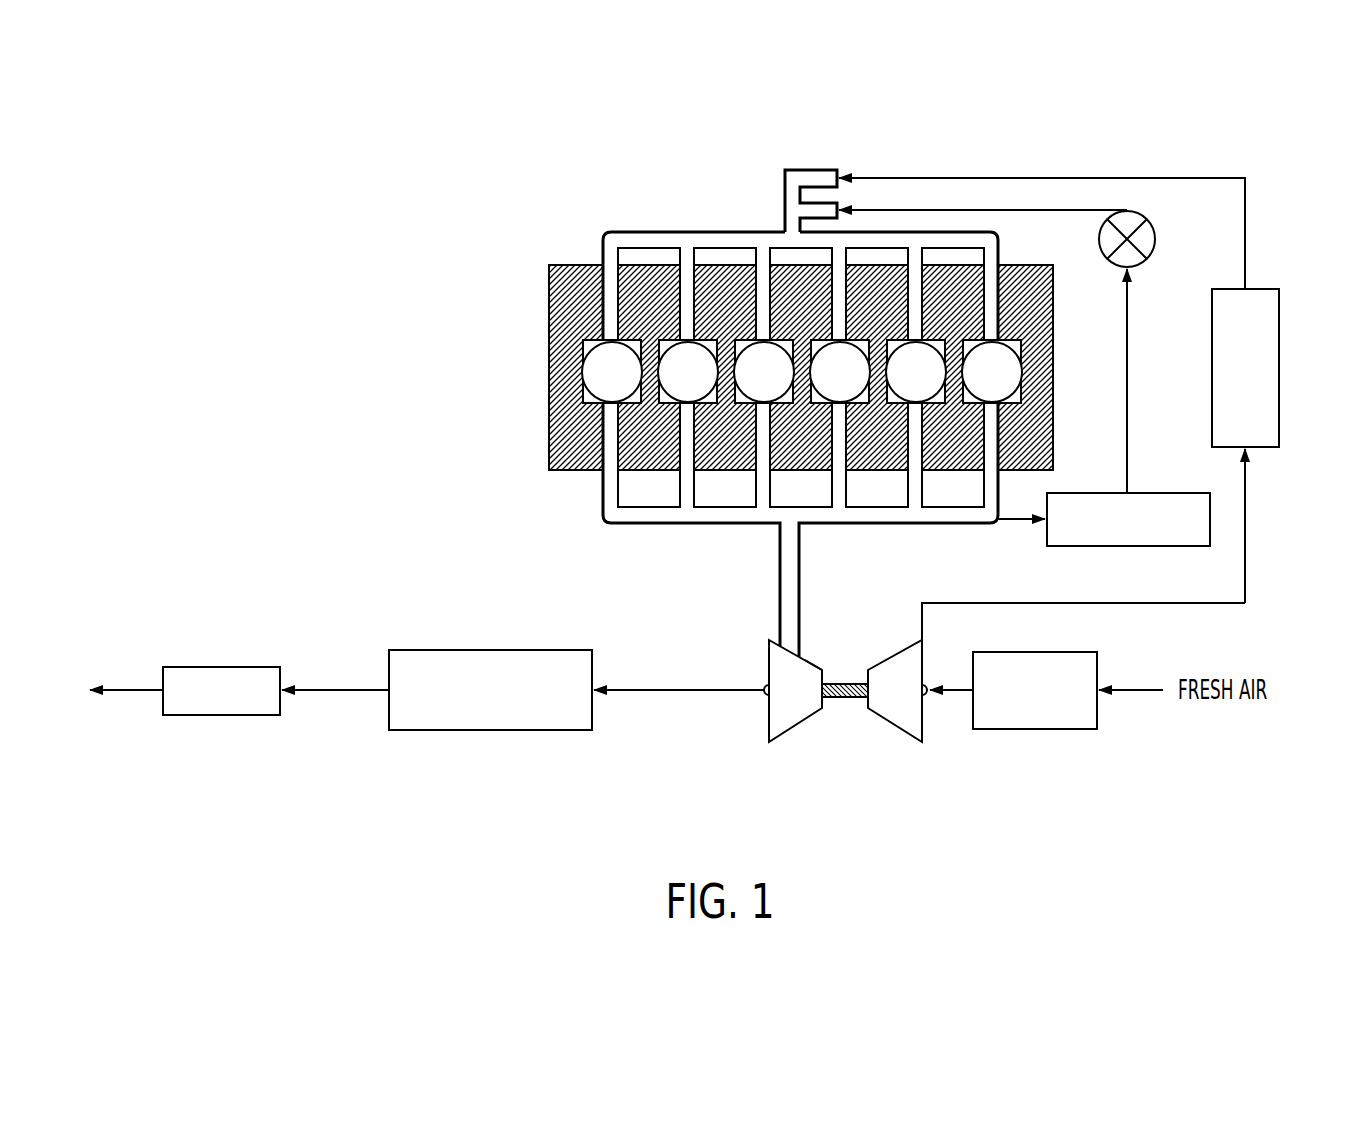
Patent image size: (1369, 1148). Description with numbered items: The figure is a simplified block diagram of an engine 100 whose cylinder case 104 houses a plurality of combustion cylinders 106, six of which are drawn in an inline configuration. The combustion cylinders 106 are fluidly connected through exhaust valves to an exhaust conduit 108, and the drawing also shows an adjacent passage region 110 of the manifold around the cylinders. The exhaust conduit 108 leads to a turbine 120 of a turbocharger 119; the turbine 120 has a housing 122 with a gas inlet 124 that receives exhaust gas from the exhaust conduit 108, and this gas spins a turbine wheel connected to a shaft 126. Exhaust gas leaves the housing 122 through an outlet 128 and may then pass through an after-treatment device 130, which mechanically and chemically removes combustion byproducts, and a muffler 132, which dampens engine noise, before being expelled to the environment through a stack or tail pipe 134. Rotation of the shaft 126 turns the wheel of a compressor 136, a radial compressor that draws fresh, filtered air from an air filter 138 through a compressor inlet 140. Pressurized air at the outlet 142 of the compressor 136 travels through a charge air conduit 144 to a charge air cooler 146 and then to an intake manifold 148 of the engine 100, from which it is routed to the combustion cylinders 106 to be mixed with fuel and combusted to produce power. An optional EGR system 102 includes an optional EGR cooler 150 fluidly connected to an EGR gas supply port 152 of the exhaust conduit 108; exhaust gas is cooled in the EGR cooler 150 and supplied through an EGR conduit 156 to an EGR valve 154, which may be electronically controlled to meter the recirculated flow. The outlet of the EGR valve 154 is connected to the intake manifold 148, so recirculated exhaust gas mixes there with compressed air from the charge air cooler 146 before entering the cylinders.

The engine 100 is at (1188, 152).
The EGR system 102 is at (1217, 588).
The cylinder case 104 is at (556, 283).
The combustion cylinders 106 is at (600, 383).
The exhaust conduit 108 is at (893, 525).
The exhaust passage 110 is at (668, 525).
The turbocharger 119 is at (845, 750).
The turbine 120 is at (799, 733).
The housing 122 is at (822, 668).
The gas inlet 124 is at (786, 648).
The shaft 126 is at (835, 698).
The outlet 128 is at (766, 696).
The after-treatment device 130 is at (492, 730).
The muffler 132 is at (222, 715).
The tail pipe 134 is at (132, 694).
The compressor 136 is at (891, 733).
The air filter 138 is at (1068, 730).
The compressor inlet 140 is at (926, 696).
The outlet 142 is at (912, 645).
The charge air conduit 144 is at (1247, 513).
The charge air cooler 146 is at (1268, 315).
The intake manifold 148 is at (812, 178).
The EGR cooler 150 is at (1066, 547).
The EGR gas supply port 152 is at (997, 525).
The EGR valve 154 is at (1147, 258).
The EGR conduit 156 is at (1130, 420).